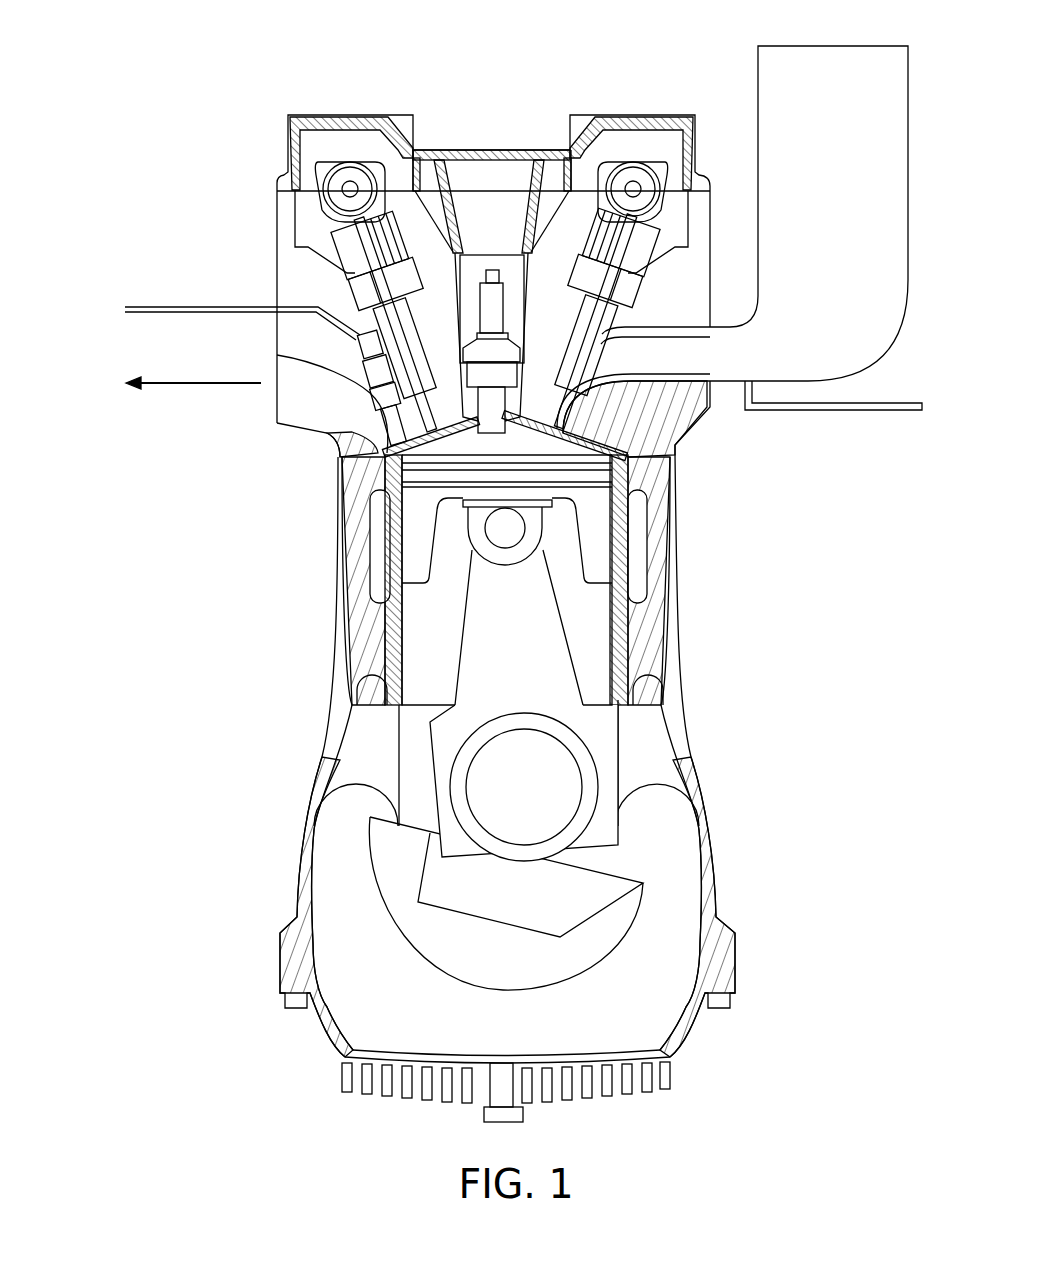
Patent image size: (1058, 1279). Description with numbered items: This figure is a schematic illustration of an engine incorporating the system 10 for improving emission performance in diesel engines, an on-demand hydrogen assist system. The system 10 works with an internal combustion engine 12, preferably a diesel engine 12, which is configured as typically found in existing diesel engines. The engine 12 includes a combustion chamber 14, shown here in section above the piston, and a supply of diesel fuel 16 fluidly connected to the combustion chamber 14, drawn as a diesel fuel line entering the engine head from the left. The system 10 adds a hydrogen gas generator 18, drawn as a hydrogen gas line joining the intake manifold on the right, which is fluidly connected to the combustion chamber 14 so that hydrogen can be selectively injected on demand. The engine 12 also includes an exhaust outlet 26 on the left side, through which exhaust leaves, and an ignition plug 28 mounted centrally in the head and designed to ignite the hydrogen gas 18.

The system 10 is at (189, 74).
The internal combustion engine 12 is at (337, 623).
The combustion chamber 14 is at (545, 458).
The supply of diesel fuel 16 is at (155, 306).
The hydrogen gas generator 18 is at (912, 402).
The exhaust outlet 26 is at (303, 400).
The ignition plug 28 is at (488, 270).